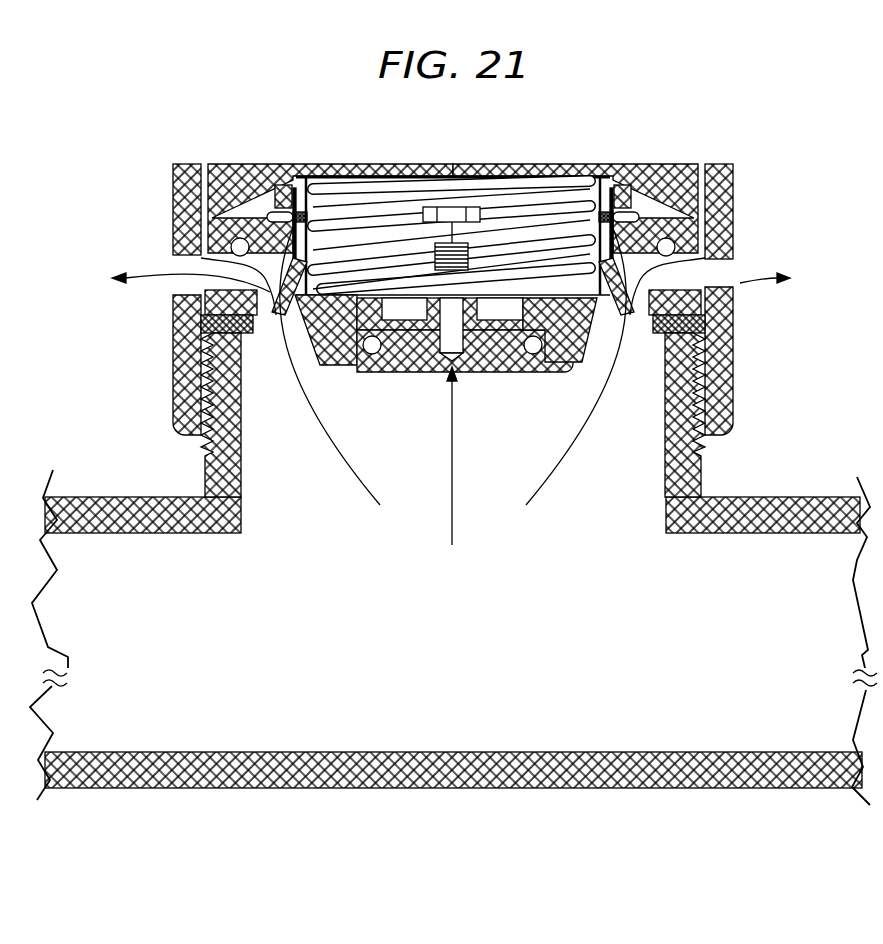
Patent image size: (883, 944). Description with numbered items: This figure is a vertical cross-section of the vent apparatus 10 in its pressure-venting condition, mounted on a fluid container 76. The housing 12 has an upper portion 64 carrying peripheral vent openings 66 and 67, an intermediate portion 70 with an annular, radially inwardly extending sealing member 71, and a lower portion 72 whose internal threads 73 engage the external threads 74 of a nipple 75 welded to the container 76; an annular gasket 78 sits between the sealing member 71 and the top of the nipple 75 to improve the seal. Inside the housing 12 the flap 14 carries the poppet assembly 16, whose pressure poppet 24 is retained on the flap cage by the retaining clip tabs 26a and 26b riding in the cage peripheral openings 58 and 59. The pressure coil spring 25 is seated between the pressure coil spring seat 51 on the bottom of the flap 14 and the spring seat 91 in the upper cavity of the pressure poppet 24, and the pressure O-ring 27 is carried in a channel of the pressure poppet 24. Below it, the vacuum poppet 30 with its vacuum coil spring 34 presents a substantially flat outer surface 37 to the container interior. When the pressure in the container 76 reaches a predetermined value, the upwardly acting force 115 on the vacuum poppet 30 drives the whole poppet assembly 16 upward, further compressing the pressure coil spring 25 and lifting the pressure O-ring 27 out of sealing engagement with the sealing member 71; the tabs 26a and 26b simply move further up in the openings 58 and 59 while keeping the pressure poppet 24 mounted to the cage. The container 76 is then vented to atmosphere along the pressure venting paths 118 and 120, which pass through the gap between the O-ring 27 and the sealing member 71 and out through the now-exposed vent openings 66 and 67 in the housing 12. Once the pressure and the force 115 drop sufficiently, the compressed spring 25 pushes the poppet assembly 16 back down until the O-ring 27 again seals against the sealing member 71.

The vent apparatus 10 is at (476, 328).
The housing 12 is at (505, 362).
The flap 14 is at (505, 273).
The poppet assembly 16 is at (354, 208).
The pressure poppet 24 is at (306, 340).
The pressure coil spring 25 is at (470, 188).
The tab 26a is at (608, 197).
The tab 26b is at (292, 195).
The pressure O-ring 27 is at (676, 247).
The vacuum poppet 30 is at (477, 373).
The vacuum coil spring 34 is at (433, 248).
The flat outer surface 37 is at (418, 373).
The pressure coil spring seat 51 is at (521, 176).
The peripheral opening 58 is at (622, 218).
The peripheral opening 59 is at (296, 262).
The upper portion 64 is at (735, 215).
The vent opening 66 is at (640, 272).
The vent opening 67 is at (181, 268).
The intermediate portion 70 is at (520, 406).
The sealing member 71 is at (692, 303).
The lower portion 72 is at (737, 421).
The internal threads 73 is at (697, 397).
The external threads 74 is at (697, 449).
The nipple 75 is at (205, 471).
The container 76 is at (590, 789).
The annular gasket 78 is at (257, 322).
The pressure coil spring seat 91 is at (361, 360).
The upwardly acting force 115 is at (479, 469).
The pressure venting path 118 is at (582, 451).
The pressure venting path 120 is at (330, 452).